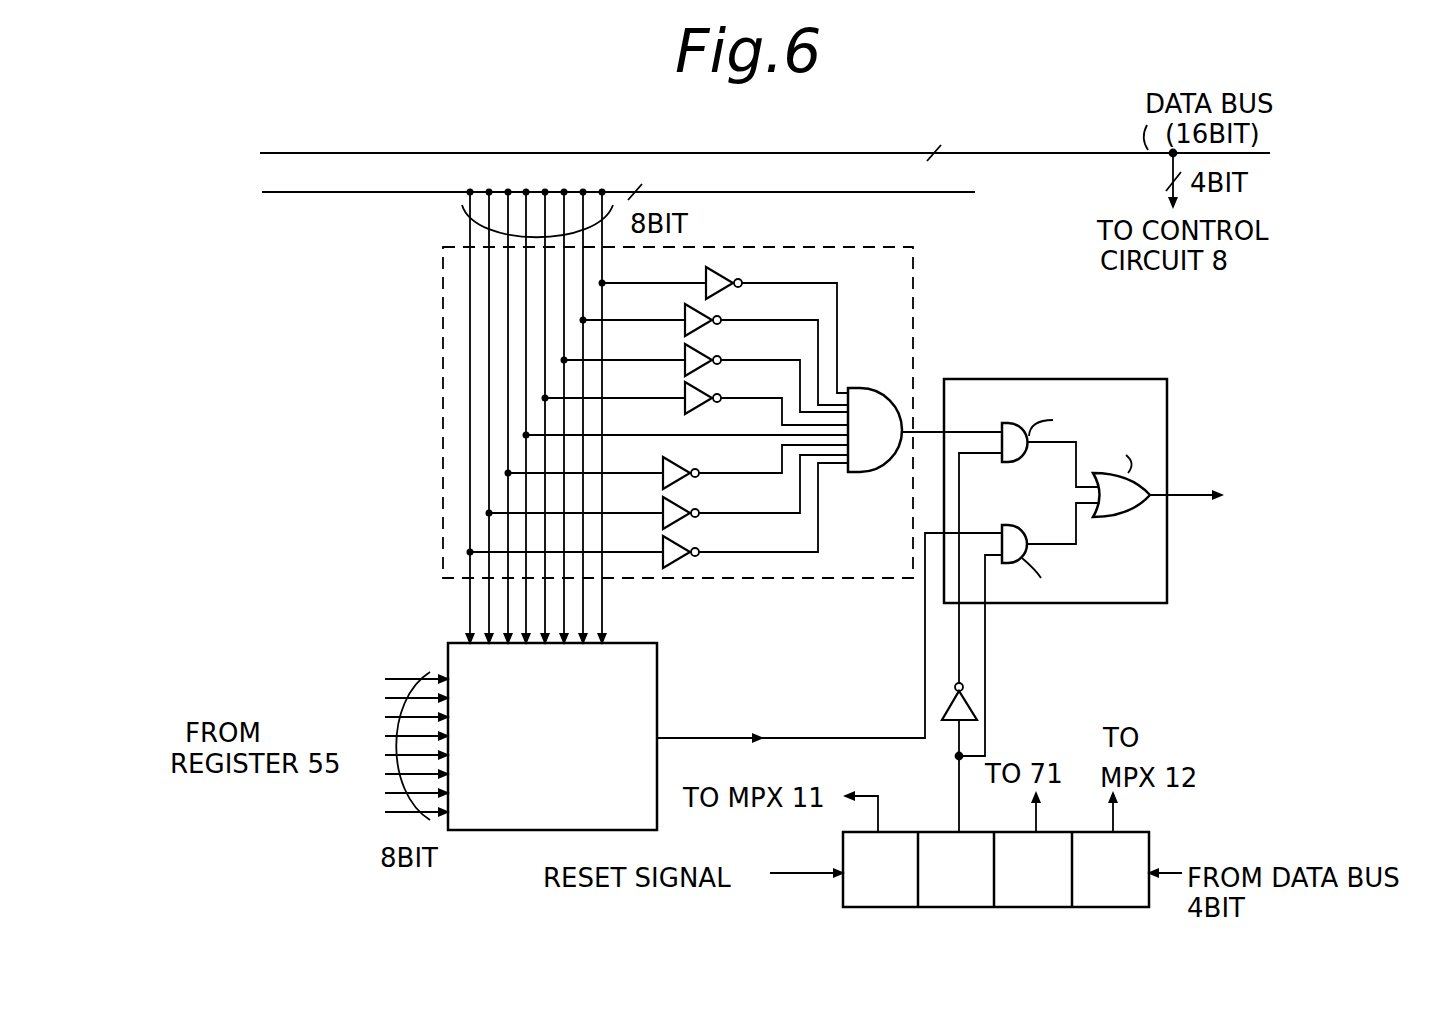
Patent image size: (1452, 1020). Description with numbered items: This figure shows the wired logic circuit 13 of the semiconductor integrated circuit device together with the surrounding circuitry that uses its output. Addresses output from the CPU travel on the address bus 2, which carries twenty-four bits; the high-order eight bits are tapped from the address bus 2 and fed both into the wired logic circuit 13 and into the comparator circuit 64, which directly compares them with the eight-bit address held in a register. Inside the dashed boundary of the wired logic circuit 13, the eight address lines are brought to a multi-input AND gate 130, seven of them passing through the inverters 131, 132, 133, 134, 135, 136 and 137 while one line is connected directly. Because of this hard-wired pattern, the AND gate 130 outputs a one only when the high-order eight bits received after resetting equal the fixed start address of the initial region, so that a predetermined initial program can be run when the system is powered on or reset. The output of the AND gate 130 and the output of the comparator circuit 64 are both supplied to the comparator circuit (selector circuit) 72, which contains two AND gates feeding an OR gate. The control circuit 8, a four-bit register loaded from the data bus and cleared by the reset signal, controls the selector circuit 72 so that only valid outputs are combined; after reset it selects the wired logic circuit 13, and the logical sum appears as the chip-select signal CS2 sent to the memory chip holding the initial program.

The address bus 2 is at (345, 195).
The wired logic circuit 13 is at (443, 400).
The AND gate 130 is at (874, 388).
The inverter 131 is at (737, 277).
The inverter 132 is at (716, 314).
The inverter 133 is at (716, 354).
The inverter 134 is at (716, 392).
The inverter 135 is at (694, 546).
The inverter 136 is at (694, 507).
The inverter 137 is at (694, 467).
The comparator circuit 64 is at (448, 657).
The comparator circuit (selector circuit) 72 is at (1114, 379).
The control circuit 8 is at (1150, 840).